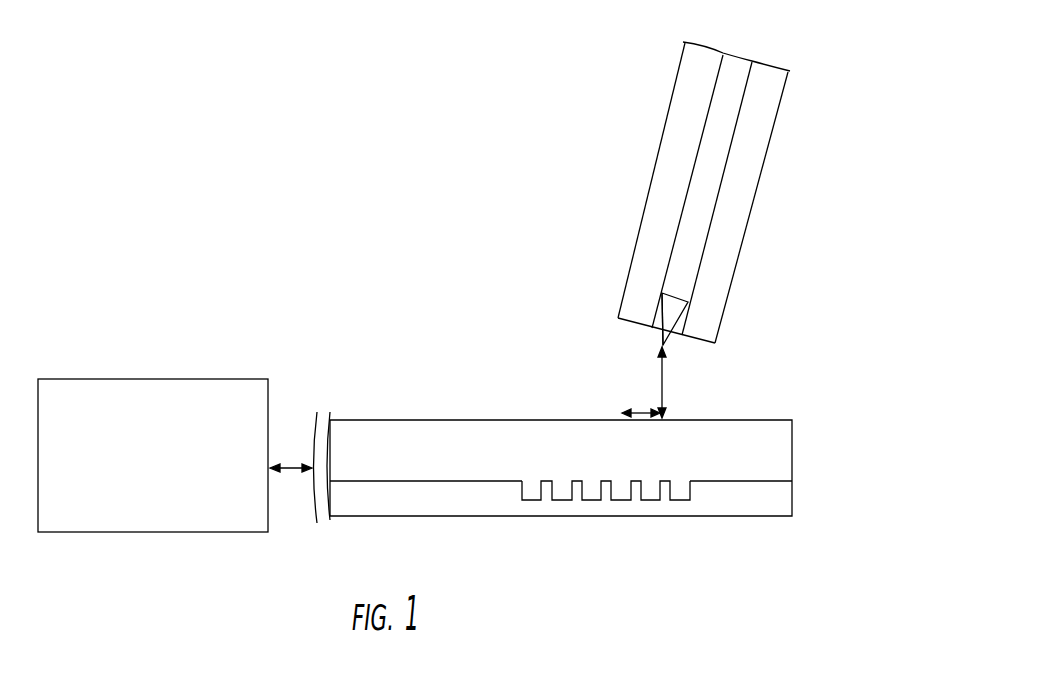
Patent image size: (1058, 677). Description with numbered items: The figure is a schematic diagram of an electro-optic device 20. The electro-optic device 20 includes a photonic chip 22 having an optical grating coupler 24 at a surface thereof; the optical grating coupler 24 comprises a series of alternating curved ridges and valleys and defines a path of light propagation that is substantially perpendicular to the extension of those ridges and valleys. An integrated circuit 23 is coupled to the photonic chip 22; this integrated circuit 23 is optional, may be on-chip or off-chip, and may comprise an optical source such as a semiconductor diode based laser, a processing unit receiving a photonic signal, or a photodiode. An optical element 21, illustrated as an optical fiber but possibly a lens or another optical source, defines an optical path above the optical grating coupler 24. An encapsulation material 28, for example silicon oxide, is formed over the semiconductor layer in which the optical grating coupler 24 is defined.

The electro-optic device 20 is at (528, 126).
The optical element 21 is at (762, 198).
The photonic chip 22 is at (485, 410).
The integrated circuit 23 is at (211, 379).
The optical grating coupler 24 is at (585, 508).
The encapsulation material 28 is at (778, 441).